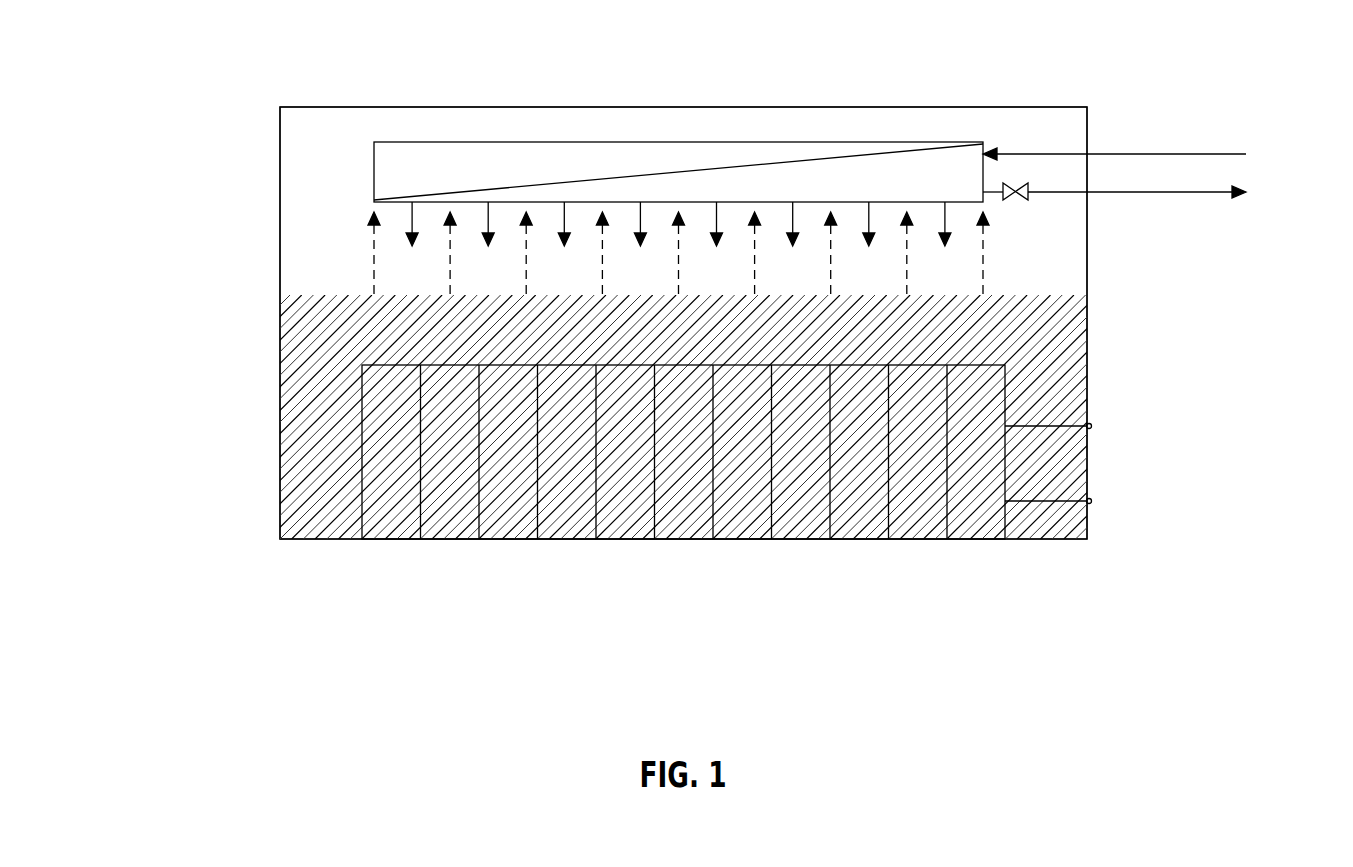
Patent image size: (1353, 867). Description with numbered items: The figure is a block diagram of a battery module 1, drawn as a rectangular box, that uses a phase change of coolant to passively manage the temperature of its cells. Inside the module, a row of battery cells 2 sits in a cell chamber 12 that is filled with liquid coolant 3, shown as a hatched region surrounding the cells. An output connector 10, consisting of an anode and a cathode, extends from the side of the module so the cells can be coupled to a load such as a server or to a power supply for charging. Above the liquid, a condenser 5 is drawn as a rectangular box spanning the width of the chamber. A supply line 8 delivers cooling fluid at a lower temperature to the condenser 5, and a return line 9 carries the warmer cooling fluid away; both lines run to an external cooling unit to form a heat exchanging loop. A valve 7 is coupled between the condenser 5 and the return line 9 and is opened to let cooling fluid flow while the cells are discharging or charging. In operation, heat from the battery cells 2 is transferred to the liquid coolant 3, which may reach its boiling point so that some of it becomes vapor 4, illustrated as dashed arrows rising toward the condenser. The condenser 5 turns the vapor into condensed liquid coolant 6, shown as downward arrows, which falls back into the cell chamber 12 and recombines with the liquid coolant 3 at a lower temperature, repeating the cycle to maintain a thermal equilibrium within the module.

The battery module 1 is at (307, 562).
The battery cells 2 is at (1005, 563).
The liquid coolant 3 is at (308, 460).
The vapor 4 is at (372, 266).
The condenser 5 is at (562, 142).
The condensed liquid coolant 6 is at (410, 222).
The valve 7 is at (1022, 195).
The supply line 8 is at (1114, 140).
The return line 9 is at (1114, 181).
The output connector 10 is at (1115, 467).
The cell chamber 12 is at (1059, 275).